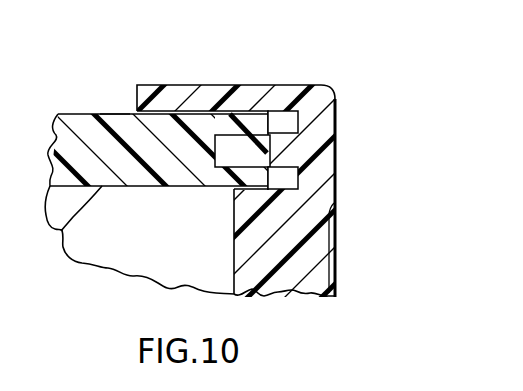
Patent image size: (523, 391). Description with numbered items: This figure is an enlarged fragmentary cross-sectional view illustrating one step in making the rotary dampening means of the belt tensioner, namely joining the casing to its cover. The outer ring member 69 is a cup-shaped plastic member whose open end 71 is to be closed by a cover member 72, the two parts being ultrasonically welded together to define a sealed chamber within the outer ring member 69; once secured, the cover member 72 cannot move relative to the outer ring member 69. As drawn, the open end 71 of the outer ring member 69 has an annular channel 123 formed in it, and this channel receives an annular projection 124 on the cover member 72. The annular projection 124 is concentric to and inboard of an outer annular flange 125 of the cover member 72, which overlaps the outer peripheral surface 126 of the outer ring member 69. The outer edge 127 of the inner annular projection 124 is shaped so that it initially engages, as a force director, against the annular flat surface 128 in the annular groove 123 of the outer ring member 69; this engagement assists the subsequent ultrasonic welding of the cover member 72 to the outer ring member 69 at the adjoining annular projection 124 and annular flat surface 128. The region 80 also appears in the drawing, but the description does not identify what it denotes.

The outer ring member 69 is at (88, 112).
The open end 71 is at (265, 133).
The cover member 72 is at (306, 283).
The support structure 80 is at (63, 231).
The annular channel 123 is at (233, 135).
The annular projection 124 is at (297, 111).
The outer annular flange 125 is at (148, 85).
The outer peripheral surface 126 is at (110, 113).
The outer edge 127 is at (214, 136).
The annular flat surface 128 is at (236, 186).